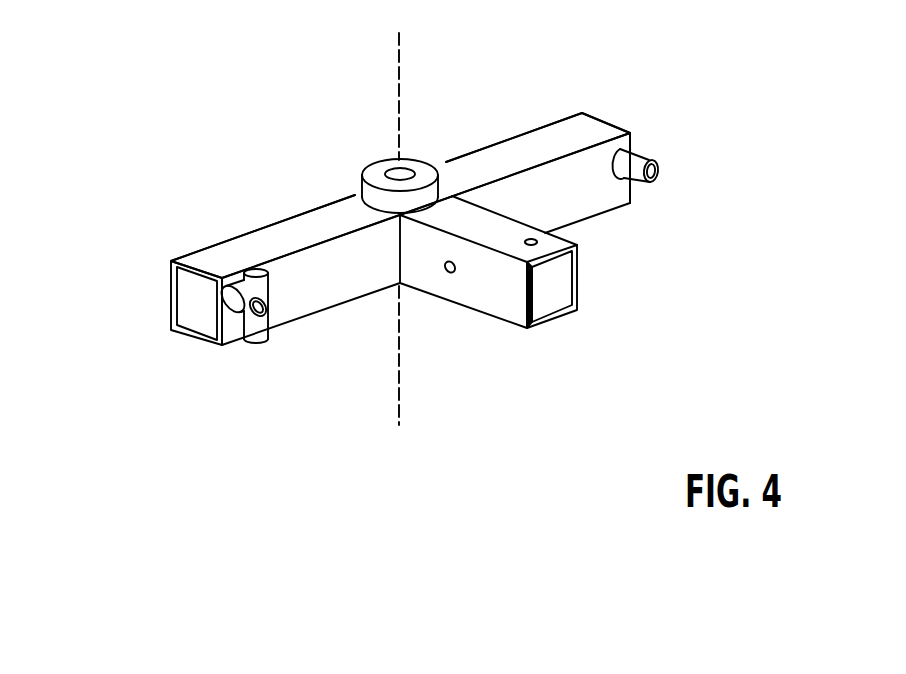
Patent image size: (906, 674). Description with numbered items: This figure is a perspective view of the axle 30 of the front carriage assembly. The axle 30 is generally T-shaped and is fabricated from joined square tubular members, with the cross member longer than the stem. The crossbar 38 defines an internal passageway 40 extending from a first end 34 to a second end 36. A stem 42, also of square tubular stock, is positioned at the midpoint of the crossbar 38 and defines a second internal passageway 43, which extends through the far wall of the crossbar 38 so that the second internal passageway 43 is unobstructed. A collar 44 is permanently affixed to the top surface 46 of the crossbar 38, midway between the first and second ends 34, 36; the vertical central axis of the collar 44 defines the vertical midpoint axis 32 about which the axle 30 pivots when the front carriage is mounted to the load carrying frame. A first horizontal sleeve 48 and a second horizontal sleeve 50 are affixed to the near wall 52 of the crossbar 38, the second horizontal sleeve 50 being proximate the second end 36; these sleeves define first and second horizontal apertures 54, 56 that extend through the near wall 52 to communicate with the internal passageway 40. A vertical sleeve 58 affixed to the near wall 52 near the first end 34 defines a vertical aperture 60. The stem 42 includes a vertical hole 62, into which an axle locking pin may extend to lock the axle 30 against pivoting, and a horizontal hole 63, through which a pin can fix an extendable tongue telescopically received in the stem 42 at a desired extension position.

The axle 30 is at (197, 74).
The vertical midpoint axis 32 is at (354, 228).
The first end 34 is at (147, 289).
The second end 36 is at (553, 155).
The crossbar 38 is at (285, 249).
The internal passageway 40 is at (193, 300).
The stem 42 is at (488, 291).
The second internal passageway 43 is at (544, 281).
The collar 44 is at (422, 161).
The top surface 46 is at (397, 195).
The first horizontal sleeve 48 is at (206, 345).
The second horizontal sleeve 50 is at (674, 146).
The near wall 52 is at (370, 283).
The first horizontal aperture 54 is at (265, 317).
The second horizontal aperture 56 is at (659, 177).
The vertical sleeve 58 is at (310, 312).
The vertical aperture 60 is at (250, 270).
The vertical hole 62 is at (590, 227).
The horizontal hole 63 is at (489, 340).